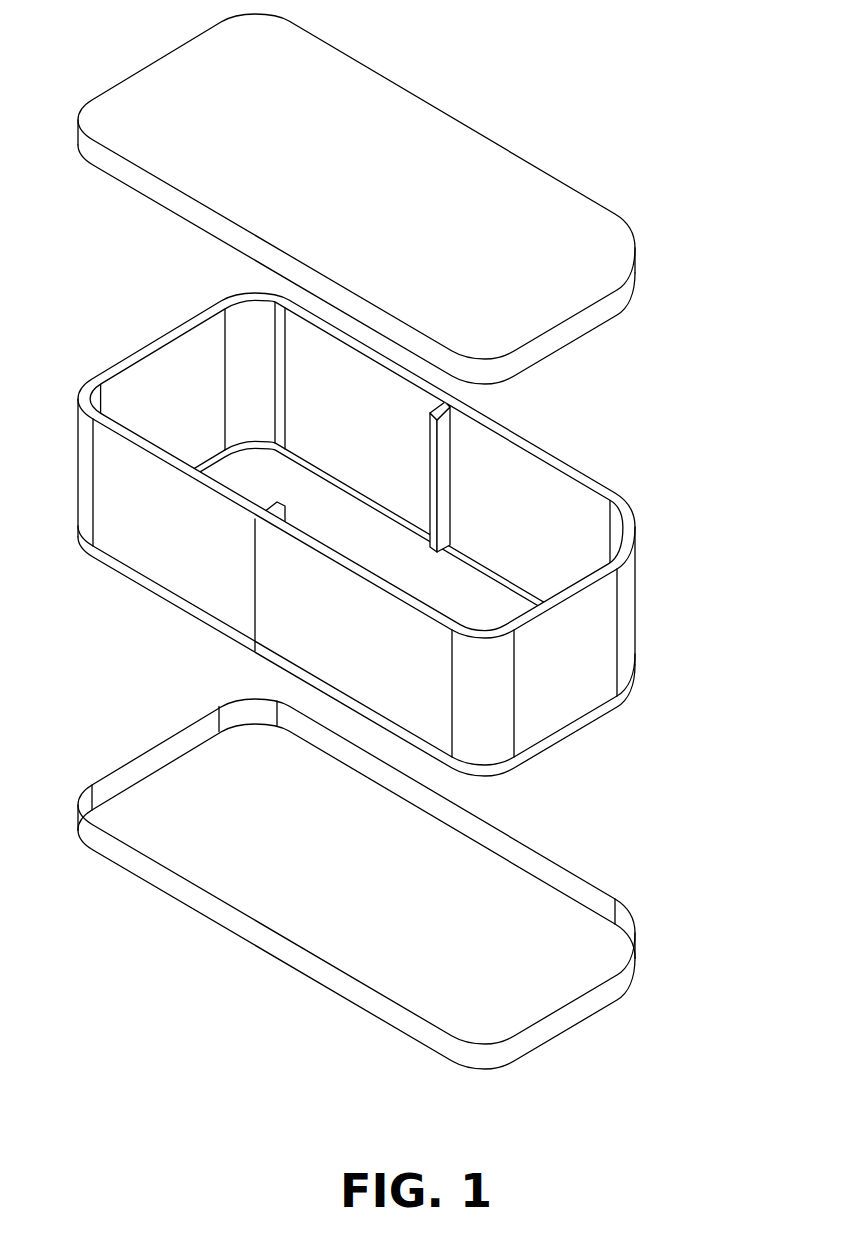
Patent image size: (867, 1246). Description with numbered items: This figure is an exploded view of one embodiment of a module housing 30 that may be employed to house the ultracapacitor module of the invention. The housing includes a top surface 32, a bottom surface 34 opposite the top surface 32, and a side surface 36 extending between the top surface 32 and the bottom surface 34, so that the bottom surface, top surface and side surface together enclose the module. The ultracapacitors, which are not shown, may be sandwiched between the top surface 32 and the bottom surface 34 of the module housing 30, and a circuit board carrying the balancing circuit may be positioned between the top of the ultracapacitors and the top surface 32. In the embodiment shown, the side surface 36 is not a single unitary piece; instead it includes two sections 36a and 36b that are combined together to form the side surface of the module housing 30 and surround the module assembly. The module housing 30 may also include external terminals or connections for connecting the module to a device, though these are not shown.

The module housing 30 is at (409, 540).
The top surface 32 is at (613, 297).
The bottom surface 34 is at (610, 1003).
The side surface 36 is at (409, 536).
The first section of the side surface 36a is at (147, 348).
The second section of the side surface 36b is at (586, 712).